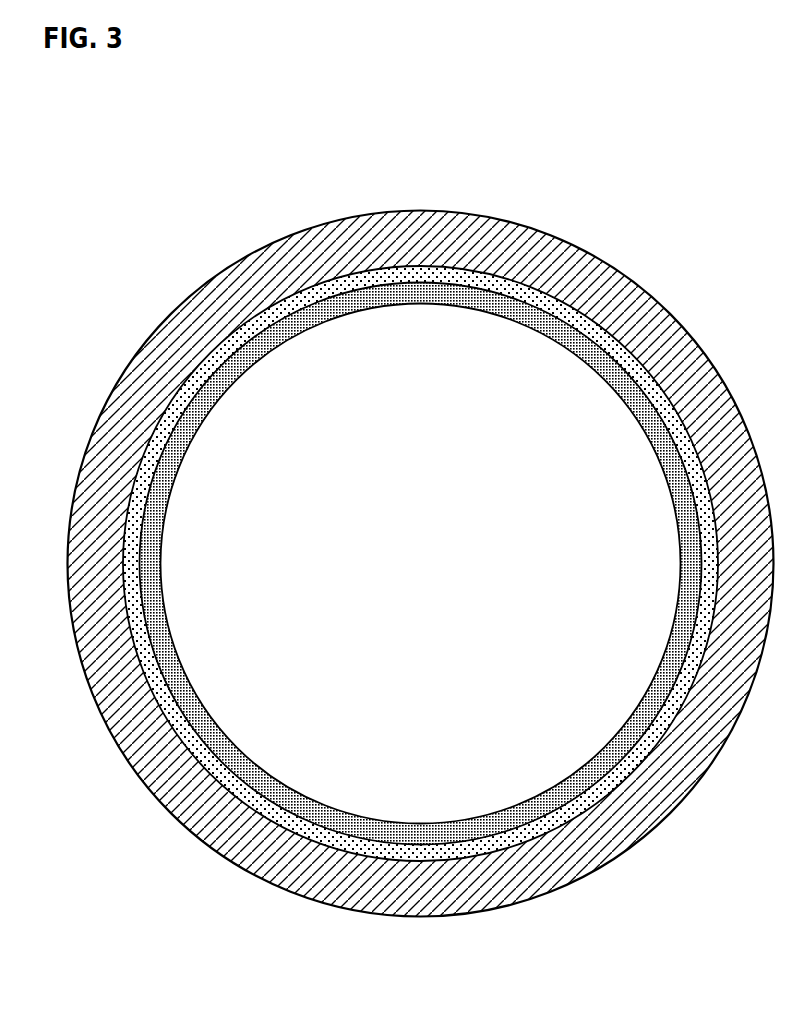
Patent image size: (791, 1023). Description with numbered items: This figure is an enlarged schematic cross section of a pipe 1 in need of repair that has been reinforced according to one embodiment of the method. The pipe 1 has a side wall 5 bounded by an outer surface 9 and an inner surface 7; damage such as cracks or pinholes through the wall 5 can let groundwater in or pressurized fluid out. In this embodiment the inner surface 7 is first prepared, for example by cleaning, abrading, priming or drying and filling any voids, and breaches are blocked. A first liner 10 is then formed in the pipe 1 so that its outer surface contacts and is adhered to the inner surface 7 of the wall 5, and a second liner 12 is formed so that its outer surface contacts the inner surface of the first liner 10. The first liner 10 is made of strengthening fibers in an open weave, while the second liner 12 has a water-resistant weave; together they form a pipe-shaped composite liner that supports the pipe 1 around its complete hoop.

The pipe 1 is at (421, 560).
The side wall 5 is at (421, 593).
The inner surface 7 is at (440, 858).
The outer surface 9 is at (151, 789).
The first liner 10 is at (216, 350).
The second liner 12 is at (307, 313).